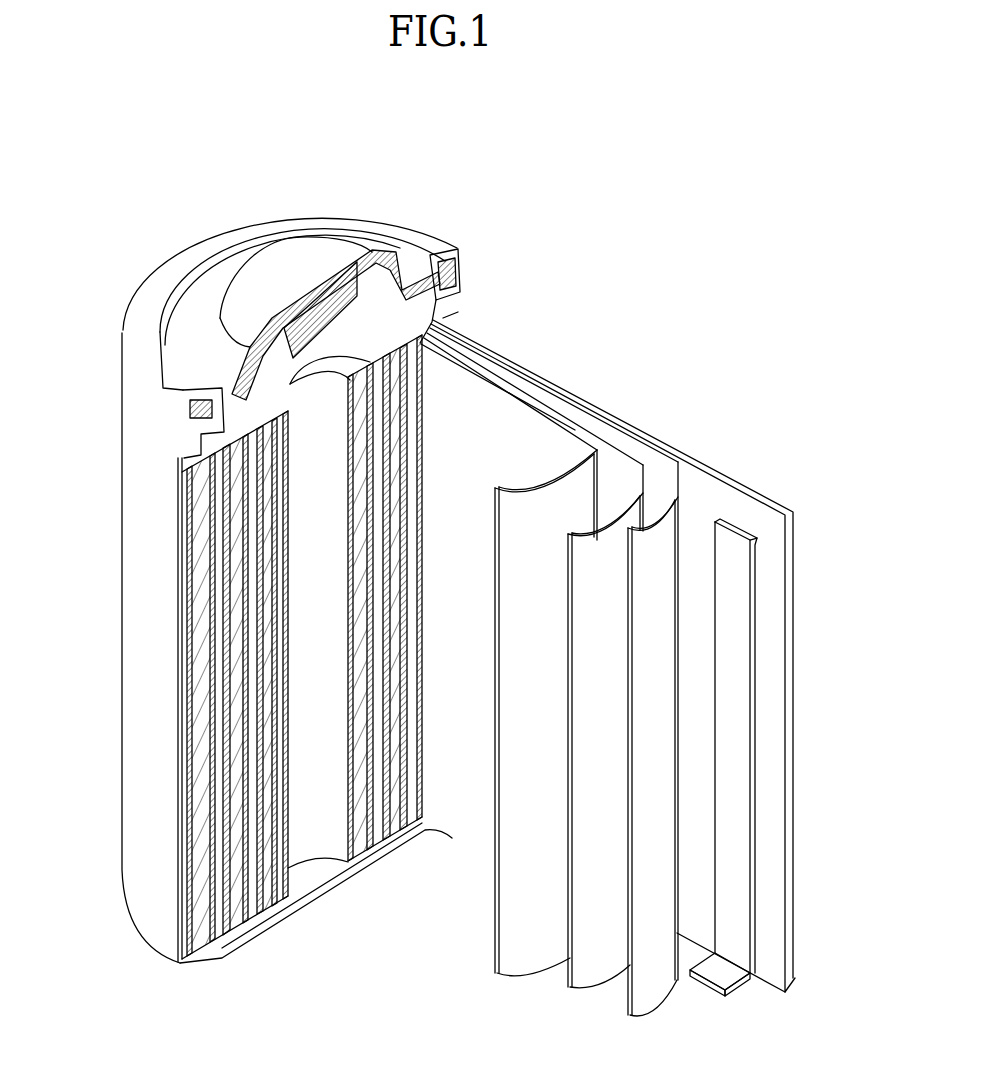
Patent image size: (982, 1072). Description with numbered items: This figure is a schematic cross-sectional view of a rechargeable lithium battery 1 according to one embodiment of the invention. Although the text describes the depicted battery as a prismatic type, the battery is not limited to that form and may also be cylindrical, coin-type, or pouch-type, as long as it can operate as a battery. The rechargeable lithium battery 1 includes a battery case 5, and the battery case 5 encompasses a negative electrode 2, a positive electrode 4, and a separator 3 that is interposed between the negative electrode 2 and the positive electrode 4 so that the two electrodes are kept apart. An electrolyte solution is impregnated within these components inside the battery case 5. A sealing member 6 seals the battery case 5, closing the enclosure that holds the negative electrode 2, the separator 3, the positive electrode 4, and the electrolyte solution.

The rechargeable lithium battery 1 is at (651, 305).
The negative electrode 2 is at (722, 475).
The separator 3 is at (573, 427).
The positive electrode 4 is at (612, 463).
The battery case 5 is at (135, 626).
The sealing member 6 is at (292, 258).